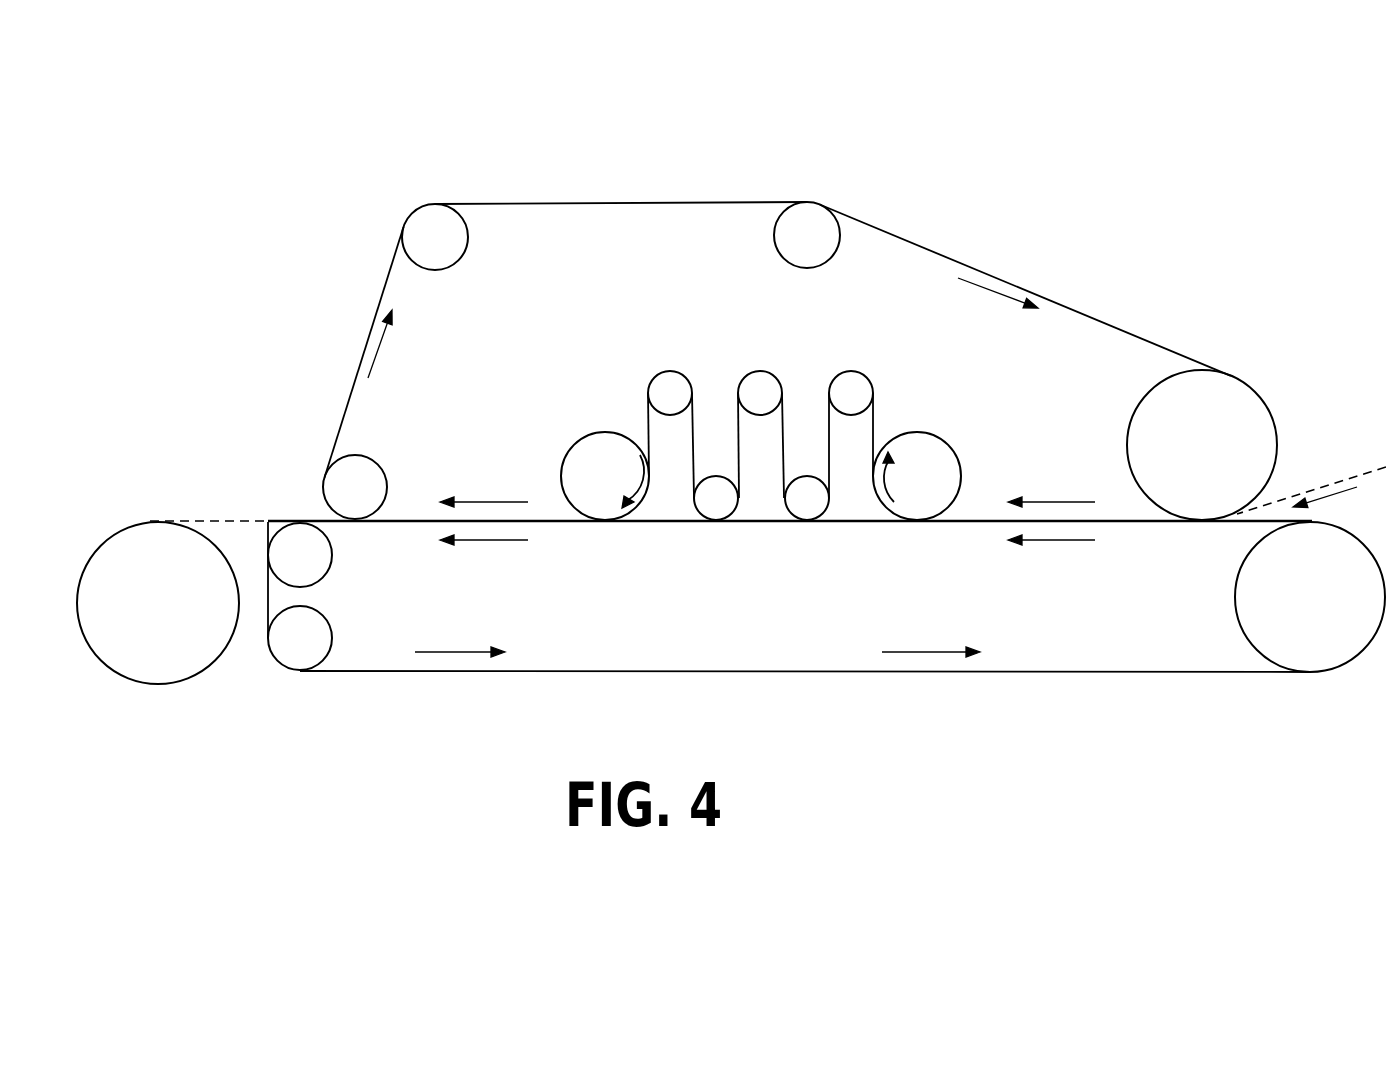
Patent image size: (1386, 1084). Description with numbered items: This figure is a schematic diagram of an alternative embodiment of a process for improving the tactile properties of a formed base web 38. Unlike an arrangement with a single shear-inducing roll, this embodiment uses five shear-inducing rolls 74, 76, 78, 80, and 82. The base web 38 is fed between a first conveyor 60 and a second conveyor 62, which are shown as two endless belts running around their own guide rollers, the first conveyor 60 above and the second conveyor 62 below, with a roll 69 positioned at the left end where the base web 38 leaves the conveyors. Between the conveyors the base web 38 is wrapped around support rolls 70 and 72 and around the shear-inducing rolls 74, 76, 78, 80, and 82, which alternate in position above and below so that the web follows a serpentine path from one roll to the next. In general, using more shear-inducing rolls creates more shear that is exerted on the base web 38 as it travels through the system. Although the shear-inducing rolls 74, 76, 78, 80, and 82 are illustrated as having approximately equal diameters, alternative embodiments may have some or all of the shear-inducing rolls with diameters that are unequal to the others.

The base web 38 is at (258, 518).
The first conveyor 60 is at (938, 250).
The second conveyor 62 is at (943, 673).
The take-up roll 69 is at (177, 683).
The support roll 70 is at (943, 464).
The support roll 72 is at (573, 465).
The shear-inducing roll 74 is at (850, 390).
The shear-inducing roll 76 is at (805, 518).
The shear-inducing roll 78 is at (764, 390).
The shear-inducing roll 80 is at (708, 515).
The shear-inducing roll 82 is at (655, 390).